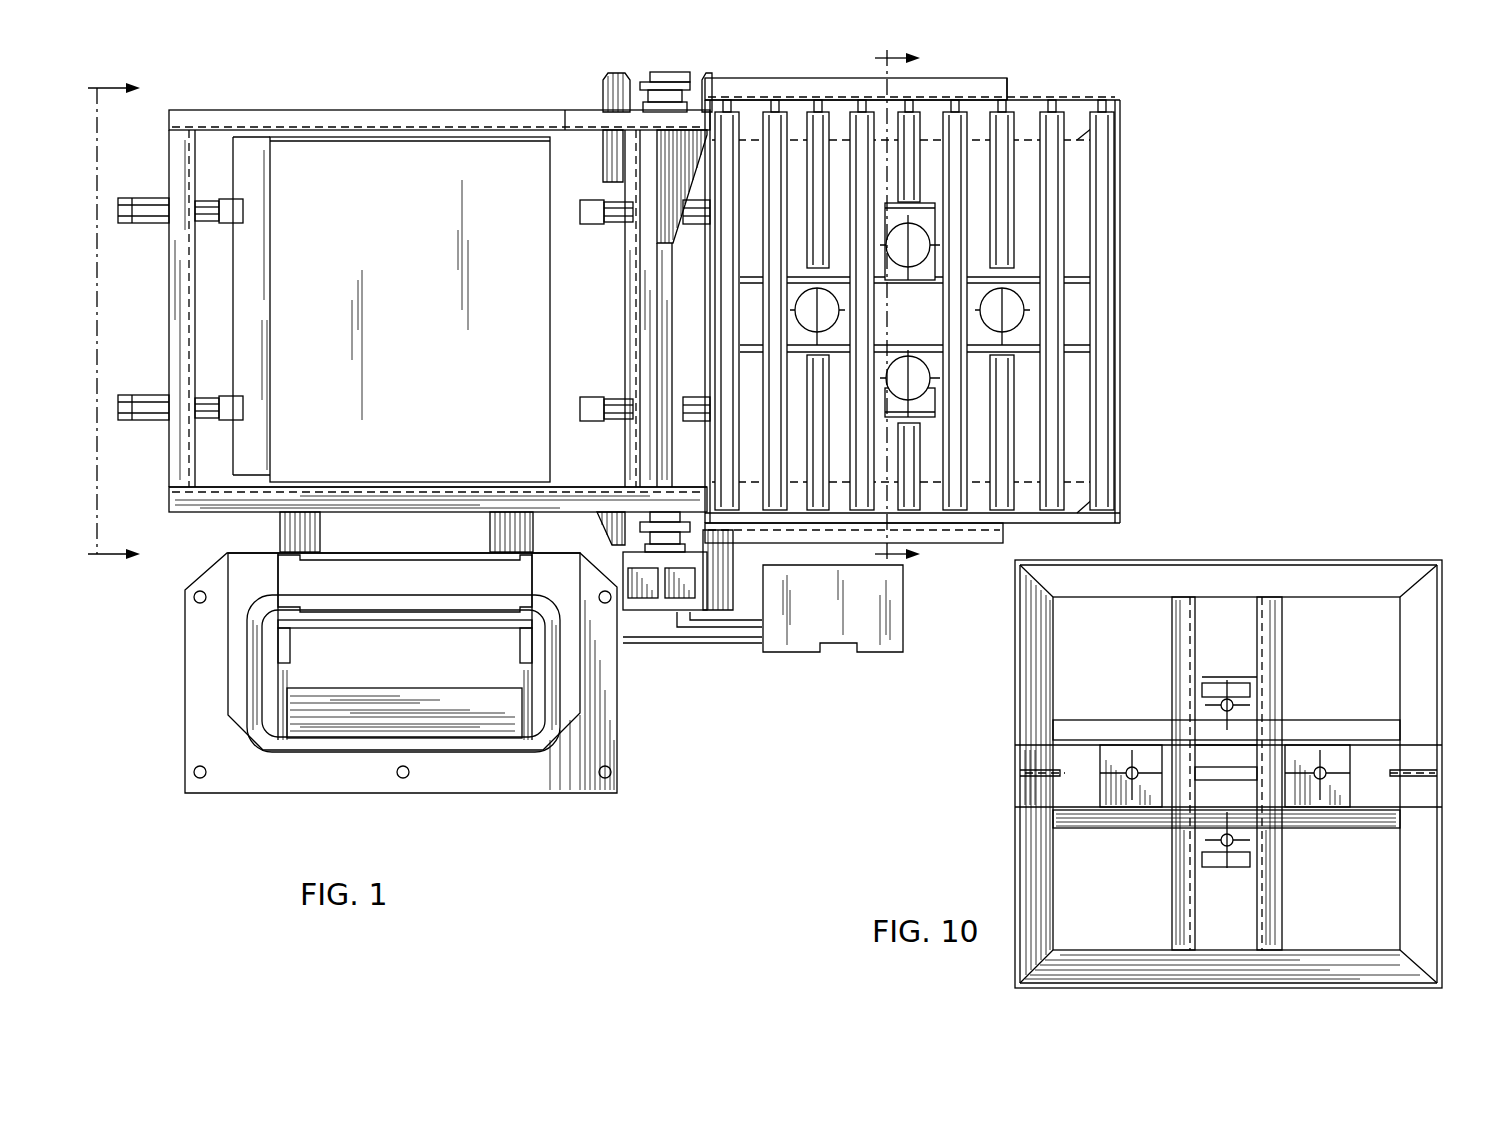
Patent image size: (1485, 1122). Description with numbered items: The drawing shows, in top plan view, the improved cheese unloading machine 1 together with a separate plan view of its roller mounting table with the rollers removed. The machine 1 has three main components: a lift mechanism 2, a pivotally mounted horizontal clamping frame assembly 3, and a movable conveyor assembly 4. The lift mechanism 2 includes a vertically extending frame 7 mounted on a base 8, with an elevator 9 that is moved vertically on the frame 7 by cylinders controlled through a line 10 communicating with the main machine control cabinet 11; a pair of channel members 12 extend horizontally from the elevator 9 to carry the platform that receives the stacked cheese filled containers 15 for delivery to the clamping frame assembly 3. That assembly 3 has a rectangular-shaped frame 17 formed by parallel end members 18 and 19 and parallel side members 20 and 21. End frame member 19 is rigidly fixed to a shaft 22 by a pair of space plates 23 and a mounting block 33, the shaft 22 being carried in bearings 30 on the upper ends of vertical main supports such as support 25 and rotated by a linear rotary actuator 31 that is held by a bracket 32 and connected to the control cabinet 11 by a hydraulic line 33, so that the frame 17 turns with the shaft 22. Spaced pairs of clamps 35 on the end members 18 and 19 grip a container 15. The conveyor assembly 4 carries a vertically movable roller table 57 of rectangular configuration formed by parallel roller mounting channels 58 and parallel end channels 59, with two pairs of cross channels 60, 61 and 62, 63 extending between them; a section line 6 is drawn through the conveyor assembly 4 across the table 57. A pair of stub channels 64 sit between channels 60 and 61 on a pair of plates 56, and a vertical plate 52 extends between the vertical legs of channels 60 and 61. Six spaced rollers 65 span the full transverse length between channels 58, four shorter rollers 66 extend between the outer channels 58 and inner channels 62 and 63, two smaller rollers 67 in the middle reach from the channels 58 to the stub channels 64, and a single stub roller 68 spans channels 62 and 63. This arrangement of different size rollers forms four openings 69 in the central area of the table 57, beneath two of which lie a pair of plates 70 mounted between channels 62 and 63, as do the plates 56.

In FIG. 1, the improved cheese unloading machine 1 is at (1178, 124).
In FIG. 1, the lift mechanism 2 is at (278, 812).
In FIG. 1, the clamping frame assembly 3 is at (255, 108).
In FIG. 1, the movable conveyor assembly 4 is at (1141, 434).
In FIG. 1, the section line 6 is at (907, 307).
In FIG. 1, the vertically extending frame 7 is at (278, 578).
In FIG. 1, the base 8 is at (190, 668).
In FIG. 1, the elevator 9 is at (452, 722).
In FIG. 1, the line 10 is at (672, 640).
In FIG. 1, the main machine control cabinet 11 is at (875, 648).
In FIG. 1, the channel members 12 is at (290, 540).
In FIG. 1, the cheese filled containers 15 is at (365, 140).
In FIG. 1, the rectangular-shaped frame 17 is at (410, 106).
In FIG. 1, the end member 18 is at (165, 310).
In FIG. 1, the end frame member 19 is at (625, 333).
In FIG. 1, the side member 20 is at (315, 112).
In FIG. 1, the side member 21 is at (225, 512).
In FIG. 1, the shaft 22 is at (668, 340).
In FIG. 1, the space plates 23 is at (690, 160).
In FIG. 1, the vertically extending main support 25 is at (603, 98).
In FIG. 1, the bearings 30 is at (632, 552).
In FIG. 1, the linear rotary actuator 31 is at (650, 608).
In FIG. 1, the bracket 32 is at (728, 600).
In FIG. 1, the hydraulic line 33 is at (712, 628).
In FIG. 1, the clamp 35 is at (228, 232).
In FIG. 10, the vertical plate 52 is at (1250, 778).
In FIG. 10, the plates 56 is at (1200, 682).
In FIG. 10, the roller table 57 is at (1323, 547).
In FIG. 1, the roller mounting channels 58 is at (1030, 98).
In FIG. 10, the roller mounting channels 58 is at (1222, 568).
In FIG. 1, the end channels 59 is at (1125, 340).
In FIG. 10, the end channels 59 is at (1425, 720).
In FIG. 10, the cross channel 60 is at (1275, 660).
In FIG. 10, the cross channel 61 is at (1178, 663).
In FIG. 10, the cross channel 62 is at (1315, 728).
In FIG. 10, the cross channel 63 is at (1338, 830).
In FIG. 1, the stub channels 64 is at (935, 205).
In FIG. 10, the stub channels 64 is at (1250, 692).
In FIG. 1, the rollers 65 is at (1100, 252).
In FIG. 1, the shorter rollers 66 is at (862, 512).
In FIG. 1, the smaller rollers 67 is at (910, 135).
In FIG. 1, the stub roller 68 is at (930, 278).
In FIG. 1, the openings 69 is at (1030, 292).
In FIG. 10, the plates 70 is at (1345, 792).